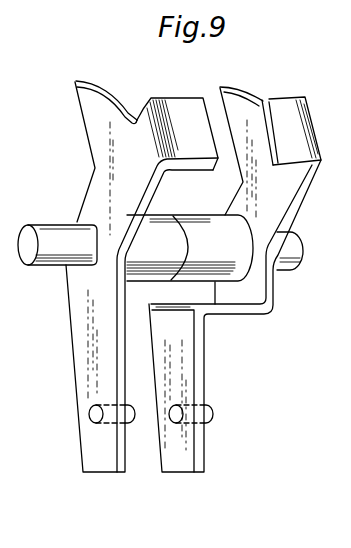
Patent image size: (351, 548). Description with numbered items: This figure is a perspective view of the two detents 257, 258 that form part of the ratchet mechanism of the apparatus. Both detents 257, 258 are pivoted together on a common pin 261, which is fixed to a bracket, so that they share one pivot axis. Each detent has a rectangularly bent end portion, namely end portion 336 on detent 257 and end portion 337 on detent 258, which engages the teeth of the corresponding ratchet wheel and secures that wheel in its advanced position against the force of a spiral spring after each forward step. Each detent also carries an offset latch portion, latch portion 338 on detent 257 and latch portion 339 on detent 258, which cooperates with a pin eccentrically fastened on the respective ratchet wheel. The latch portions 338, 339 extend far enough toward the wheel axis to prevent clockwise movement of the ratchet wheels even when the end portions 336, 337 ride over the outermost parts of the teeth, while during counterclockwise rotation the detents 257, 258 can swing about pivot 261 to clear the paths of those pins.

The offset latch portion 339 is at (87, 84).
The rectangularly bent end portion 337 is at (173, 103).
The offset latch portion 338 is at (237, 104).
The rectangularly bent end portion 336 is at (272, 122).
The pin 261 is at (34, 266).
The detent 258 is at (74, 334).
The detent 257 is at (253, 296).